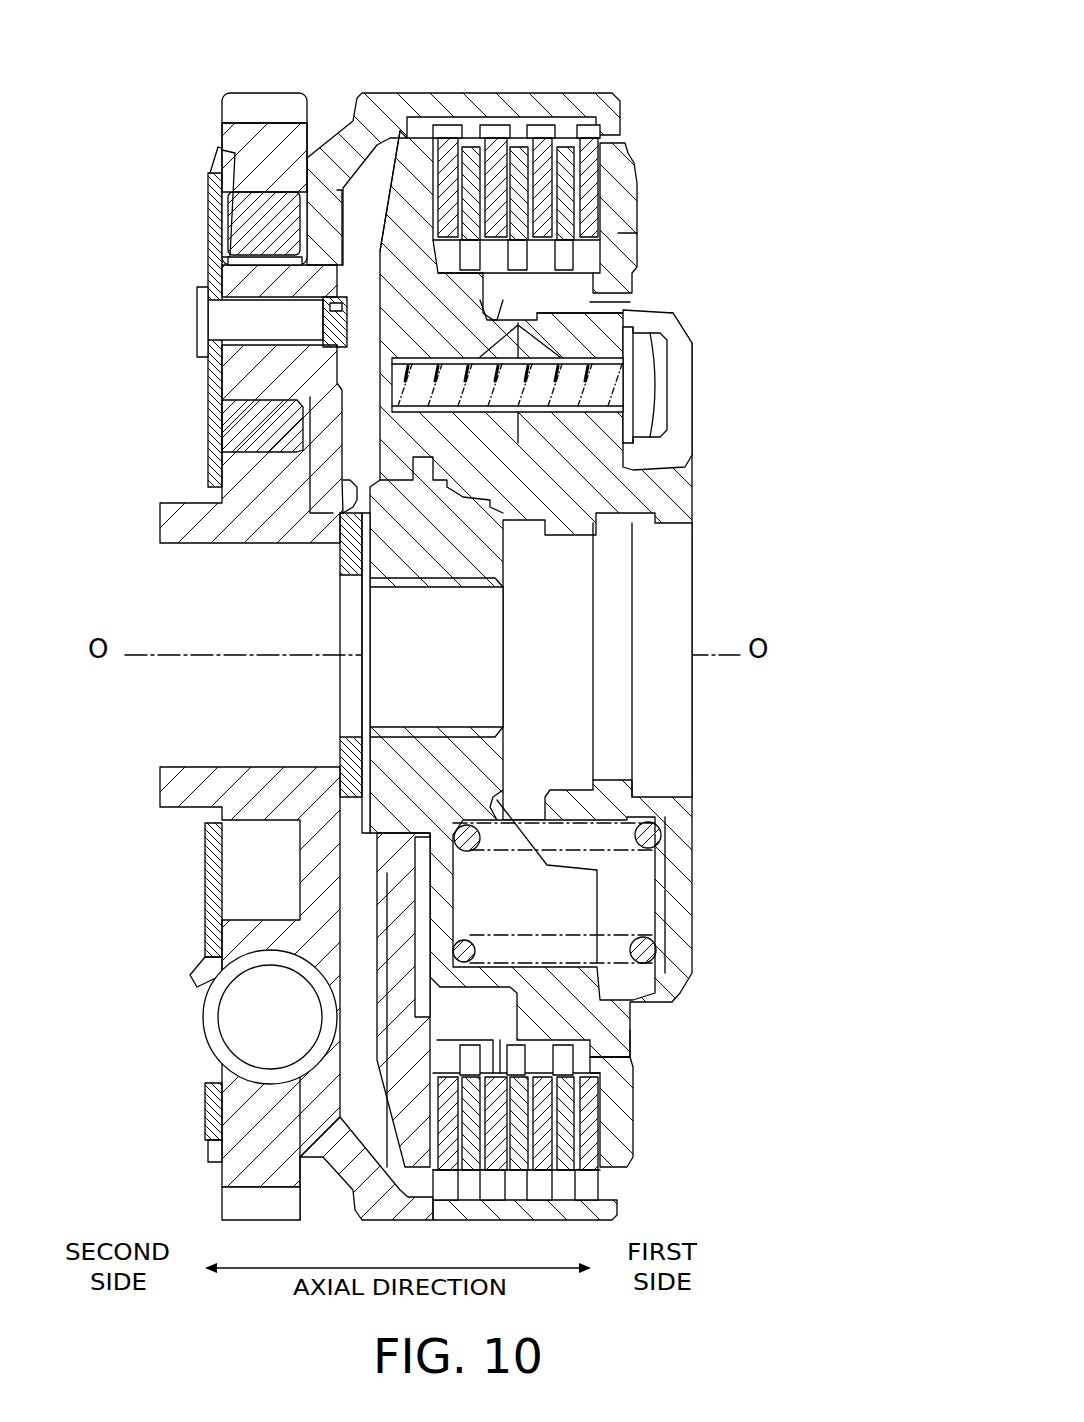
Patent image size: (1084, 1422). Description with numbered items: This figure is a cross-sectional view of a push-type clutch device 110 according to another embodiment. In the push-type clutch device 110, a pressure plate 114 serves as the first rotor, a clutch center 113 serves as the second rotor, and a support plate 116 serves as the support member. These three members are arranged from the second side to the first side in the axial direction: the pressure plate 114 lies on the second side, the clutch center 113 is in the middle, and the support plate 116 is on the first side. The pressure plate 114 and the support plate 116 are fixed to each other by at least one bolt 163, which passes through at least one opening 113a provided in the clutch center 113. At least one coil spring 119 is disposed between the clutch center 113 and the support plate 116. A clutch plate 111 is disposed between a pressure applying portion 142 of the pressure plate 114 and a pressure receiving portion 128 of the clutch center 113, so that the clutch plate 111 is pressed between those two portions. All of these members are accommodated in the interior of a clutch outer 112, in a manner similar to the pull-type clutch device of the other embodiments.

The push-type clutch device 110 is at (160, 285).
The clutch plate 111 is at (565, 129).
The clutch outer 112 is at (427, 91).
The clutch center 113 is at (653, 192).
The opening 113a is at (582, 332).
The pressure plate 114 is at (389, 193).
The support plate 116 is at (694, 488).
The coil spring 119 is at (664, 829).
The pressure receiving portion 128 is at (620, 233).
The pressure applying portion 142 is at (410, 222).
The bolt 163 is at (655, 387).